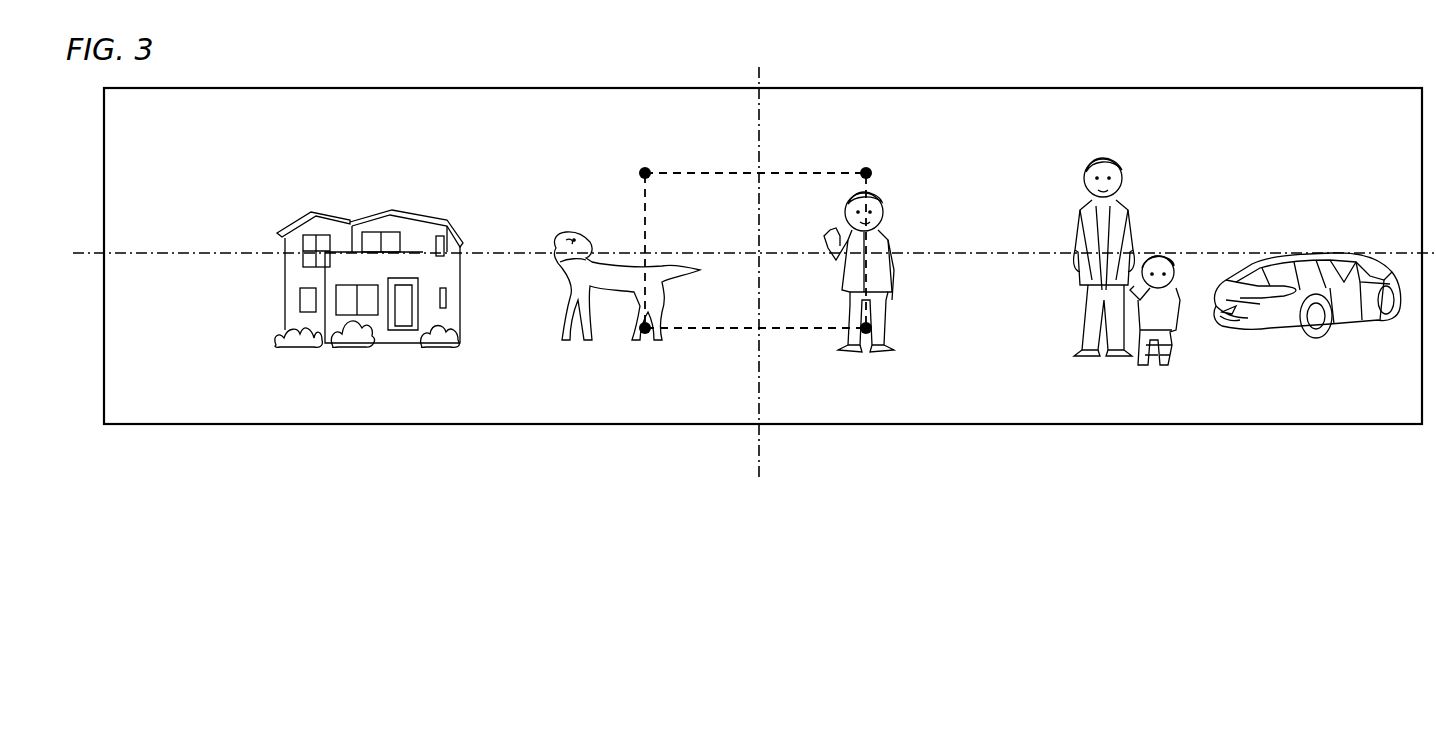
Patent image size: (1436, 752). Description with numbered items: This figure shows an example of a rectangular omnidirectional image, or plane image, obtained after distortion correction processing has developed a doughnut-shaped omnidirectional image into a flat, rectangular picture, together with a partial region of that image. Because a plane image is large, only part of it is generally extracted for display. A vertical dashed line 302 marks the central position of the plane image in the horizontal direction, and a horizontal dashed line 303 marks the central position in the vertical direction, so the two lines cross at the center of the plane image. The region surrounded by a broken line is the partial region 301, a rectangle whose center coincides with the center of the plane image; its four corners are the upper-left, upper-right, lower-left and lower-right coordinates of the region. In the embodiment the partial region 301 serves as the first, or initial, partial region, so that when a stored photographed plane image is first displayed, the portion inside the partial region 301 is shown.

The partial region 301 is at (740, 330).
The dashed line 302 is at (757, 435).
The dashed line 303 is at (178, 253).